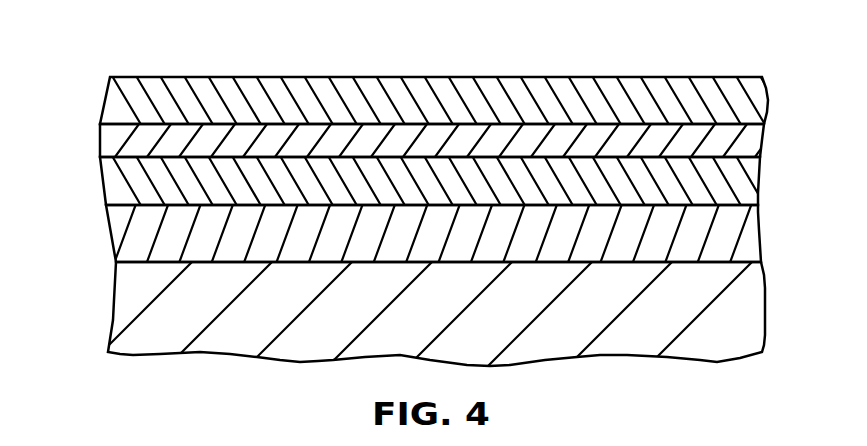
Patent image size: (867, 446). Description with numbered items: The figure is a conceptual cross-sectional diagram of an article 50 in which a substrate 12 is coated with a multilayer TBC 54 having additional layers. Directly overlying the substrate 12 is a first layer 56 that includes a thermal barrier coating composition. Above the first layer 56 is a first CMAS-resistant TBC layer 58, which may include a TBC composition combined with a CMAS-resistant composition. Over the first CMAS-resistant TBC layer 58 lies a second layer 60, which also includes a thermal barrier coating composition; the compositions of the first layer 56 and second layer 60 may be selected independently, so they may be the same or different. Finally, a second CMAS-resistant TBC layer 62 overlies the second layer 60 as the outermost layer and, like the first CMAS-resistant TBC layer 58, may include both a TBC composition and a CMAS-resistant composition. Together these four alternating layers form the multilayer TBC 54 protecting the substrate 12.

The article 50 is at (72, 39).
The substrate 12 is at (132, 303).
The multilayer TBC 54 is at (782, 77).
The first layer 56 is at (122, 235).
The first CMAS-resistant TBC layer 58 is at (118, 185).
The second layer 60 is at (122, 143).
The second CMAS-resistant TBC layer 62 is at (122, 102).